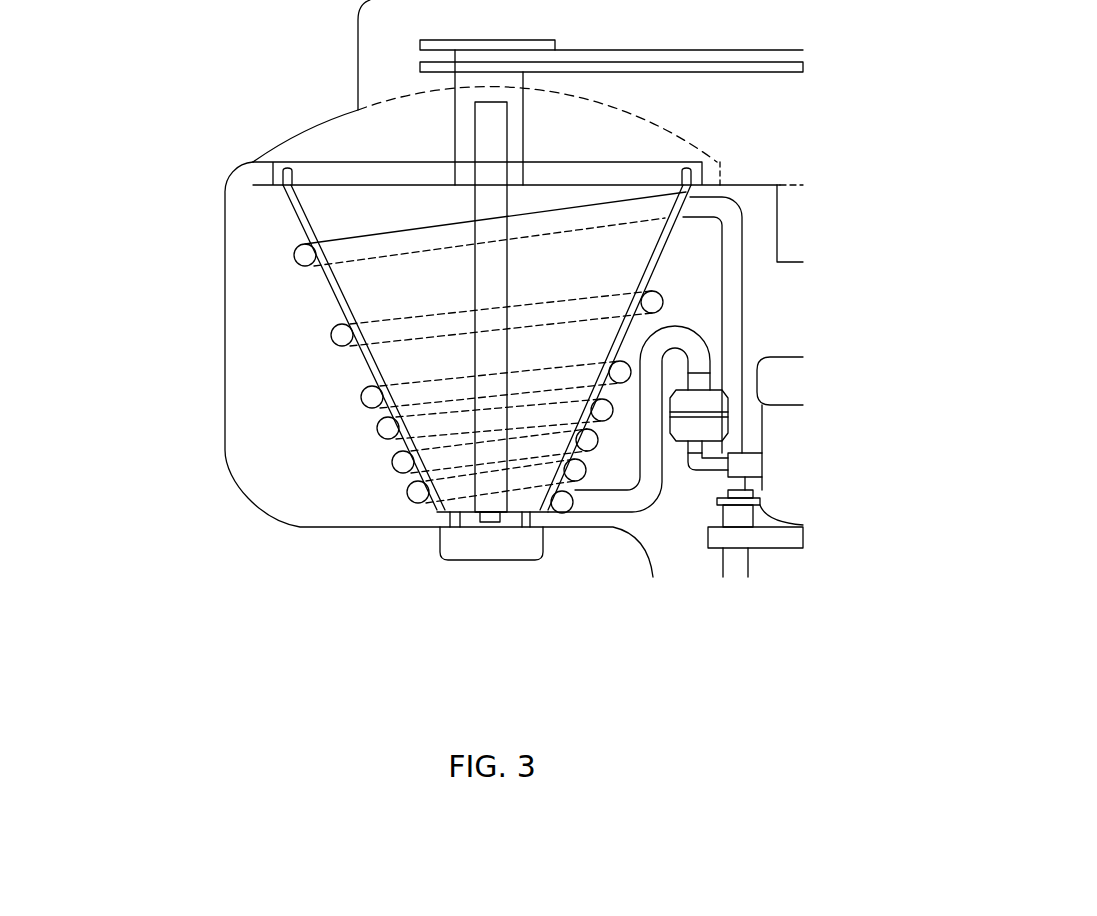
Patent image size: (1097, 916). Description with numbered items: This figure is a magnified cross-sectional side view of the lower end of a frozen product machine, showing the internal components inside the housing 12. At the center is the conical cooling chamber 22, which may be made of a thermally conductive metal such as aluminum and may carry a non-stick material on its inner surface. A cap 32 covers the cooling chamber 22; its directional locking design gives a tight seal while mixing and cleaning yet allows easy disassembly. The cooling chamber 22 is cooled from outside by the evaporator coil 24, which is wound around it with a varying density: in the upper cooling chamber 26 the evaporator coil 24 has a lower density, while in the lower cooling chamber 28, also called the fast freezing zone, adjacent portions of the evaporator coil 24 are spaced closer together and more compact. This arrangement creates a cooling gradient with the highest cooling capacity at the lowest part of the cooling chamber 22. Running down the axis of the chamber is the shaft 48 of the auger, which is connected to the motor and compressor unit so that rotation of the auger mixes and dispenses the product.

The housing 12 is at (237, 483).
The conical cooling chamber 22 is at (300, 213).
The evaporator coil 24 is at (293, 253).
The upper cooling chamber 26 is at (275, 313).
The lower cooling chamber 28 is at (355, 460).
The cap 32 is at (650, 118).
The shaft 48 is at (473, 143).